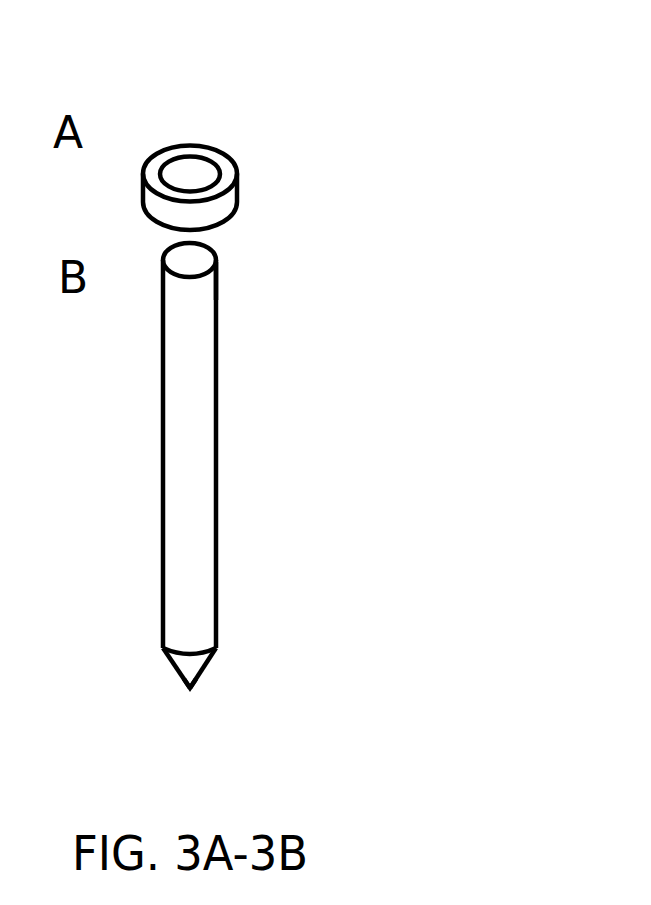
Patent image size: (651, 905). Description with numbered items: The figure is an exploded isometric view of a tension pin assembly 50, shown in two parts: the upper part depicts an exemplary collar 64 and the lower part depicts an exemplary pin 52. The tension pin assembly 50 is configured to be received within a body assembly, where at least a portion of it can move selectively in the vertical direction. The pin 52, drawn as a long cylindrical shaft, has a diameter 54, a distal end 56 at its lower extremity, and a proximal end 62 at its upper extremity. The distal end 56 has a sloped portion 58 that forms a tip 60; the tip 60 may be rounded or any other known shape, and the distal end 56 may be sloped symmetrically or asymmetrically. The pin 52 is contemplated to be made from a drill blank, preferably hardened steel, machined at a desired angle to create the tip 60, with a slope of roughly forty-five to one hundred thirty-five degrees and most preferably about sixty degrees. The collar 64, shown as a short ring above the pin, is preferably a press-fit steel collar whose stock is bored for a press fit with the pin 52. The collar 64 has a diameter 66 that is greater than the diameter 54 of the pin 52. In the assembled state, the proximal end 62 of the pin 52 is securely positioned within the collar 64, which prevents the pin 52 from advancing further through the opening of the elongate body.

In FIG. 3A, the tension pin assembly 50 is at (302, 48).
In FIG. 3B, the pin 52 is at (217, 435).
In FIG. 3B, the diameter 54 is at (219, 258).
In FIG. 3B, the distal end 56 is at (173, 663).
In FIG. 3B, the sloped portion 58 is at (203, 672).
In FIG. 3B, the tip 60 is at (190, 688).
In FIG. 3B, the proximal end 62 is at (218, 275).
In FIG. 3A, the collar 64 is at (235, 185).
In FIG. 3A, the diameter 66 is at (206, 145).